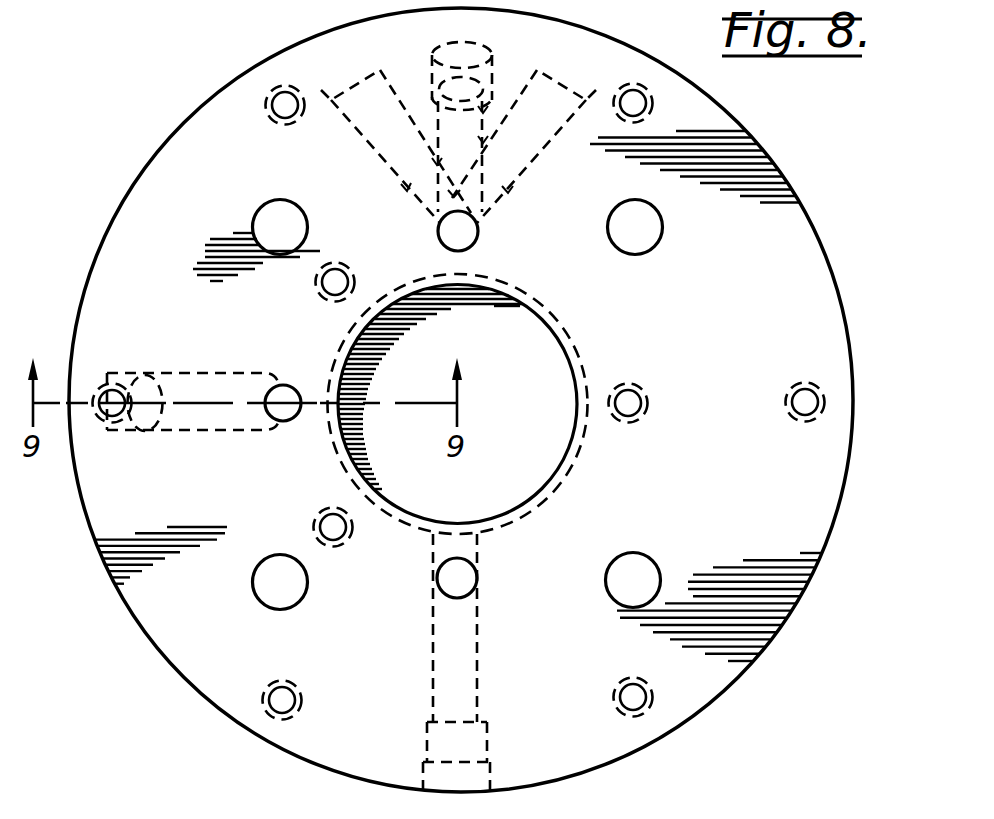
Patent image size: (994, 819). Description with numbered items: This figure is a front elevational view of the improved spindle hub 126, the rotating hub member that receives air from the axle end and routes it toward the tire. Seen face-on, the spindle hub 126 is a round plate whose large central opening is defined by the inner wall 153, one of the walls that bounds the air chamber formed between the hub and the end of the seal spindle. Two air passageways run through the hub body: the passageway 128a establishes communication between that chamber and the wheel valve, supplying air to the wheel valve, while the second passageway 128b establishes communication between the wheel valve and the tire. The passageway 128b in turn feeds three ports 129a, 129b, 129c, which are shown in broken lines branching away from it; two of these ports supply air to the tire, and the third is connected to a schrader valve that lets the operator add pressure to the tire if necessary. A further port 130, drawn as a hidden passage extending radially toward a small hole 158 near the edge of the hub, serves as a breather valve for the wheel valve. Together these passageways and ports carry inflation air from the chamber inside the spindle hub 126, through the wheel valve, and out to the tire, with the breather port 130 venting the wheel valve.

The spindle hub 126 is at (766, 140).
The air passageway 128a is at (470, 591).
The air passageway 128b is at (476, 247).
The port 129a is at (404, 189).
The port 129b is at (485, 112).
The port 129c is at (508, 191).
The port 130 is at (208, 431).
The inner wall 153 is at (578, 427).
The side hole 158 is at (117, 431).